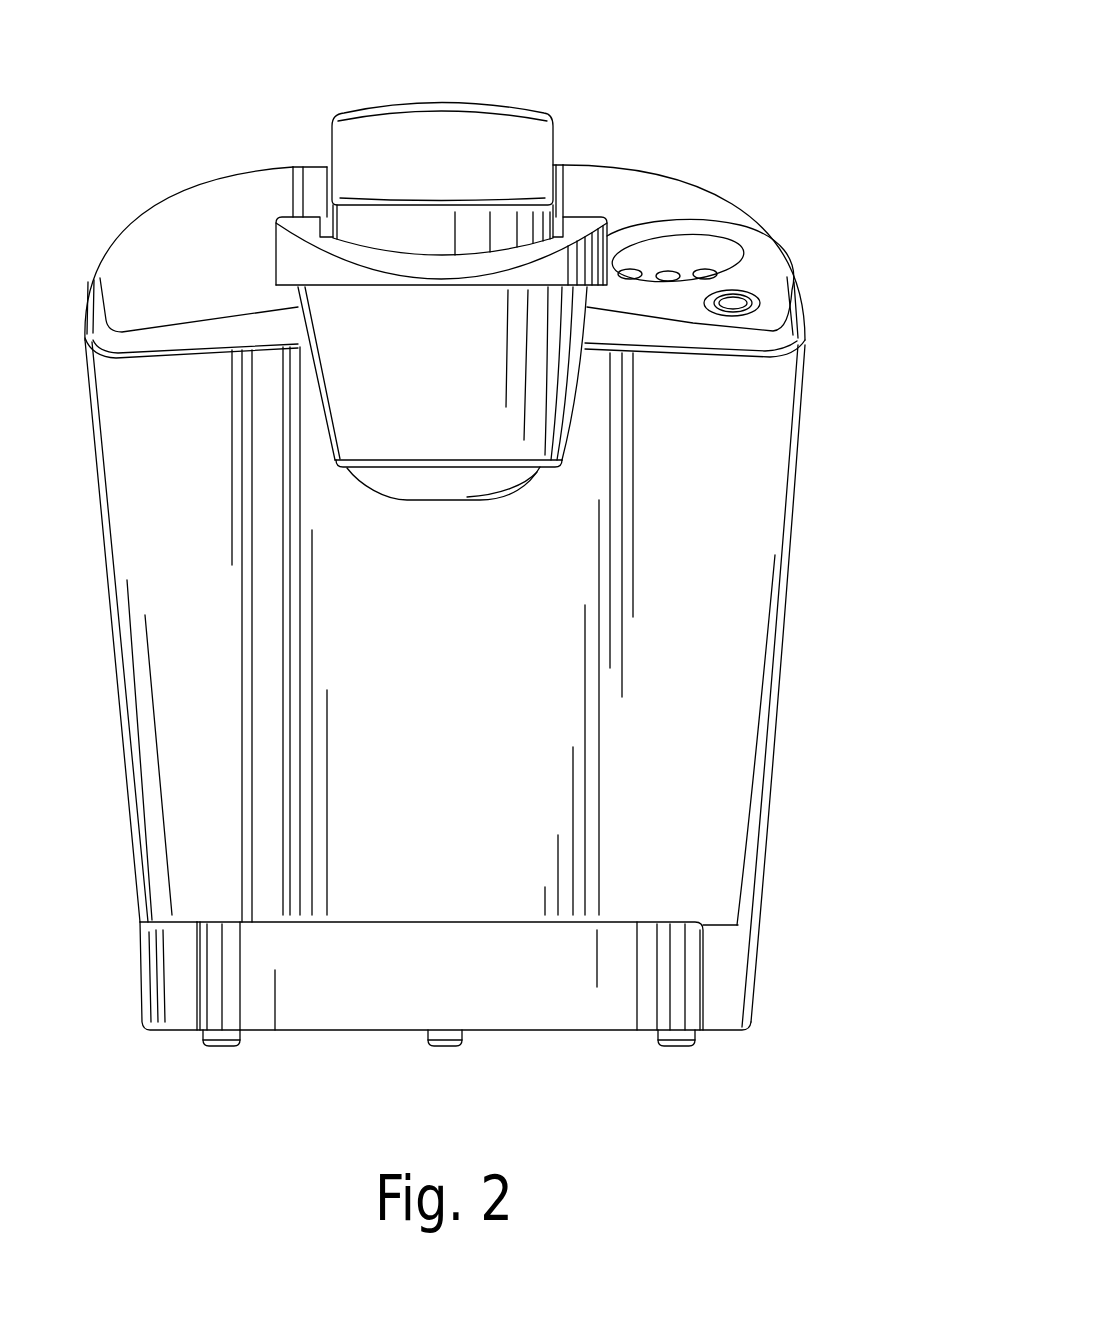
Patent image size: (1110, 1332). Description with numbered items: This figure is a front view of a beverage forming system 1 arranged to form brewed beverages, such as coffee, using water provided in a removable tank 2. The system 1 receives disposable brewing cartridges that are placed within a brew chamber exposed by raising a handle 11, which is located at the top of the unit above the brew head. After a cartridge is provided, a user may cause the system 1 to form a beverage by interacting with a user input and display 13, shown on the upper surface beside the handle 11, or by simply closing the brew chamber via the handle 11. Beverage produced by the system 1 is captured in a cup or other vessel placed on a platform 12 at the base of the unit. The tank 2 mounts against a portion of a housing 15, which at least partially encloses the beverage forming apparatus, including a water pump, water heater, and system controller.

The beverage forming system 1 is at (638, 100).
The removable tank 2 is at (148, 735).
The handle 11 is at (288, 218).
The platform 12 is at (677, 920).
The user input and display 13 is at (737, 237).
The housing 15 is at (745, 618).